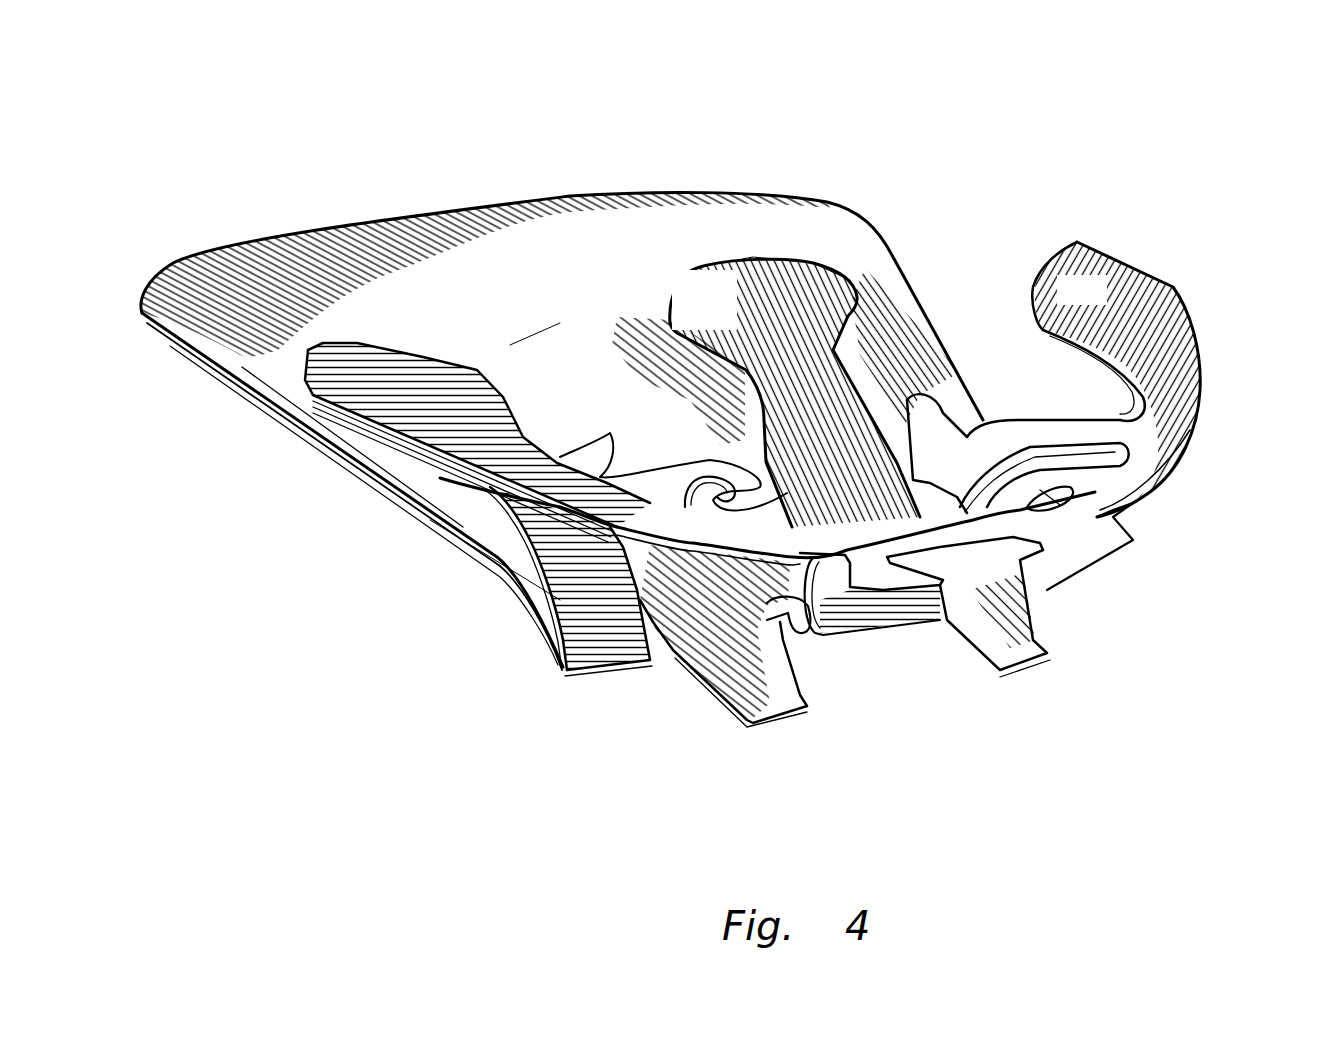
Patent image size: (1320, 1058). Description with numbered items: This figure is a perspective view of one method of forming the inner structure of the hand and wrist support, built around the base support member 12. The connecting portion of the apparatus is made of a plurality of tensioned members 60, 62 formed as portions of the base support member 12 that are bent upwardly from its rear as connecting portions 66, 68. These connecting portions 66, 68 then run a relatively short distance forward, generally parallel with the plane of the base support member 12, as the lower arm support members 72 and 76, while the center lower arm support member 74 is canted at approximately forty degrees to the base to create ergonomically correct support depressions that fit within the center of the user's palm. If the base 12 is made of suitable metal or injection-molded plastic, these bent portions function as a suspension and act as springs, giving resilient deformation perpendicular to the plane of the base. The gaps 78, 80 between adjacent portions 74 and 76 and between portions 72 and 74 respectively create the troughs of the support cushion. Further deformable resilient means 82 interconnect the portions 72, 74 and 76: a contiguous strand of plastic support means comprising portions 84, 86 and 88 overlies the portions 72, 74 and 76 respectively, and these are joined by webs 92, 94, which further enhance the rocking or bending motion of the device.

The base support member 12 is at (562, 431).
The tensioned member 60 is at (600, 672).
The tensioned member 62 is at (843, 633).
The connecting portion 66 is at (560, 597).
The connecting portion 68 is at (765, 625).
The lower arm support member 72 is at (313, 390).
The center lower arm support member 74 is at (707, 490).
The lower arm support member 76 is at (1117, 383).
The gap 78 is at (963, 237).
The gap 80 is at (517, 350).
The deformable resilient means 82 is at (763, 237).
The plastic support portion 84 is at (372, 382).
The plastic support portion 86 is at (740, 314).
The plastic support portion 88 is at (1100, 304).
The web 92 is at (690, 543).
The web 94 is at (1097, 500).